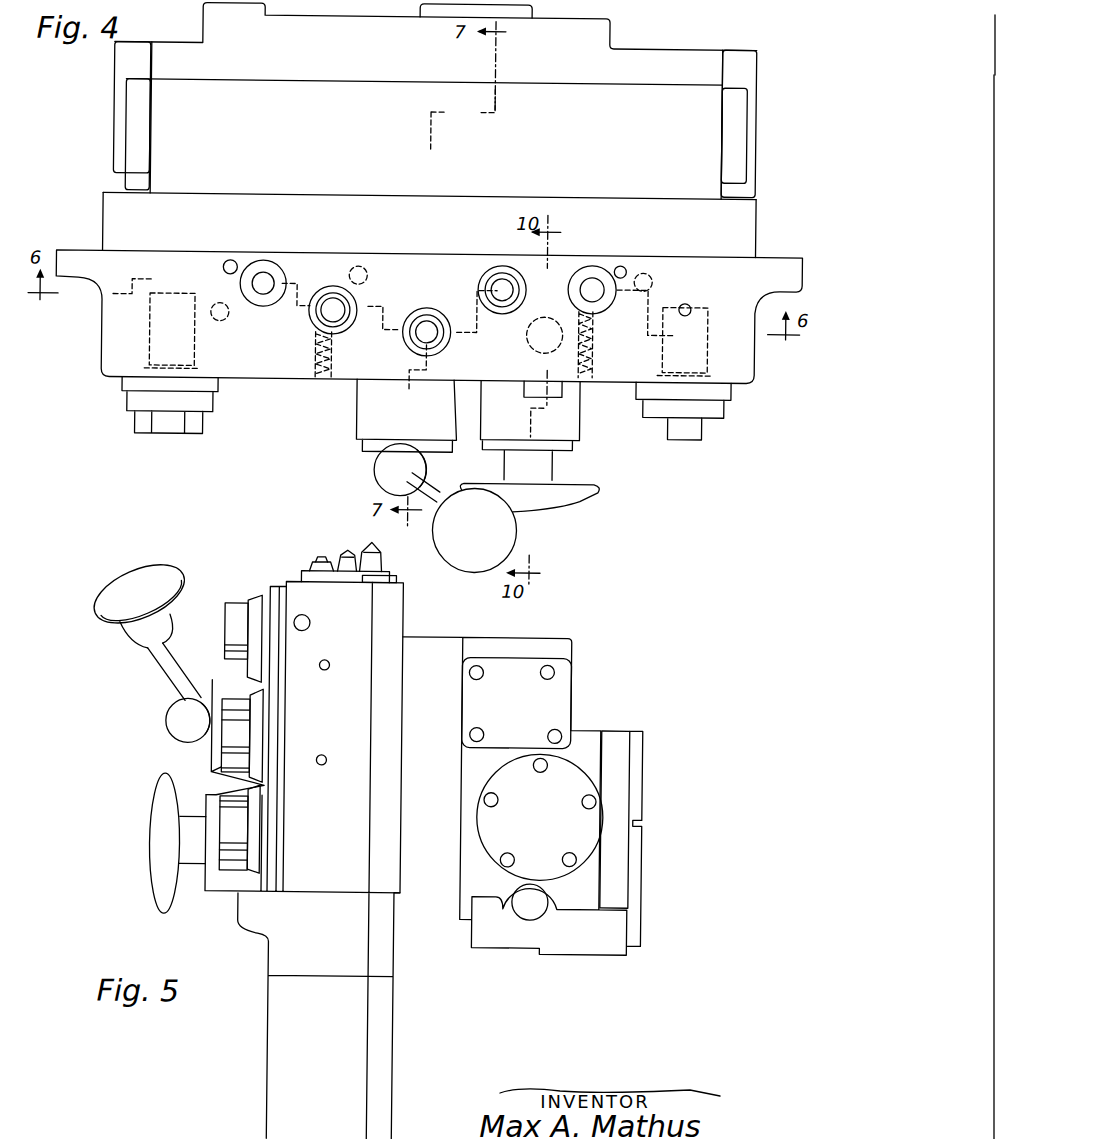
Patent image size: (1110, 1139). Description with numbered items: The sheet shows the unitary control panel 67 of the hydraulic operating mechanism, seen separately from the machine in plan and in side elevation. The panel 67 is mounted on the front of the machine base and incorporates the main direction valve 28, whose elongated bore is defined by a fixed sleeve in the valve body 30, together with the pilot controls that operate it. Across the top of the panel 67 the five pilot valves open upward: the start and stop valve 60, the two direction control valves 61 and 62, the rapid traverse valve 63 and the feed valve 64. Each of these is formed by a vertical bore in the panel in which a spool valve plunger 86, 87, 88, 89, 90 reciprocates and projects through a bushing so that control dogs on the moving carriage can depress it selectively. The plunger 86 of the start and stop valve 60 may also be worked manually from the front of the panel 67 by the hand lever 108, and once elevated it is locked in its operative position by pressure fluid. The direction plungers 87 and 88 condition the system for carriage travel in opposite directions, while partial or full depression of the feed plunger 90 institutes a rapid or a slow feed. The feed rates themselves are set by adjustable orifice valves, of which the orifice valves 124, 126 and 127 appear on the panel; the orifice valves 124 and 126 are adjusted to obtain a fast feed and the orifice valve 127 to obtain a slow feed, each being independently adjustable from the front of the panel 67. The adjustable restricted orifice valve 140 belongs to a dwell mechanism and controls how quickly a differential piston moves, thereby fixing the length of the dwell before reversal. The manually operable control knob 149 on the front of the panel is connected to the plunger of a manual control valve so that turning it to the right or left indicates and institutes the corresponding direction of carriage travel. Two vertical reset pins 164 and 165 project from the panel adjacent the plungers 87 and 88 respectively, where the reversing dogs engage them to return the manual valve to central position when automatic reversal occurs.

In FIG. 4, the direction valve 28 is at (557, 80).
In FIG. 5, the direction valve 28 is at (610, 805).
In FIG. 4, the valve body 30 is at (711, 147).
In FIG. 5, the valve body 30 is at (589, 737).
In FIG. 4, the start and stop valve 60 is at (437, 316).
In FIG. 5, the start and stop valve 60 is at (300, 559).
In FIG. 4, the direction control valve 61 is at (272, 262).
In FIG. 4, the direction control valve 62 is at (592, 258).
In FIG. 5, the direction control valve 62 is at (384, 571).
In FIG. 4, the rapid traverse valve 63 is at (502, 264).
In FIG. 4, the feed valve 64 is at (330, 286).
In FIG. 5, the feed valve 64 is at (341, 545).
In FIG. 4, the control panel 67 is at (272, 388).
In FIG. 5, the control panel 67 is at (274, 579).
In FIG. 4, the spool valve plunger 86 is at (425, 323).
In FIG. 5, the spool valve plunger 86 is at (318, 558).
In FIG. 4, the spool valve plunger 87 is at (261, 296).
In FIG. 4, the spool valve plunger 88 is at (593, 283).
In FIG. 5, the spool valve plunger 88 is at (380, 565).
In FIG. 4, the spool valve plunger 89 is at (505, 300).
In FIG. 4, the spool valve plunger 90 is at (340, 316).
In FIG. 5, the spool valve plunger 90 is at (354, 543).
In FIG. 4, the hand lever 108 is at (514, 527).
In FIG. 5, the hand lever 108 is at (118, 634).
In FIG. 4, the adjustable orifice valve 124 is at (146, 342).
In FIG. 4, the adjustable orifice valve 126 is at (716, 330).
In FIG. 5, the adjustable orifice valve 126 is at (219, 610).
In FIG. 5, the adjustable orifice valve 127 is at (222, 752).
In FIG. 5, the adjustable restricted orifice valve 140 is at (216, 809).
In FIG. 4, the control knob 149 is at (570, 498).
In FIG. 5, the control knob 149 is at (160, 820).
In FIG. 4, the reset pin 164 is at (231, 262).
In FIG. 4, the reset pin 165 is at (627, 270).
In FIG. 5, the reset pin 165 is at (388, 578).